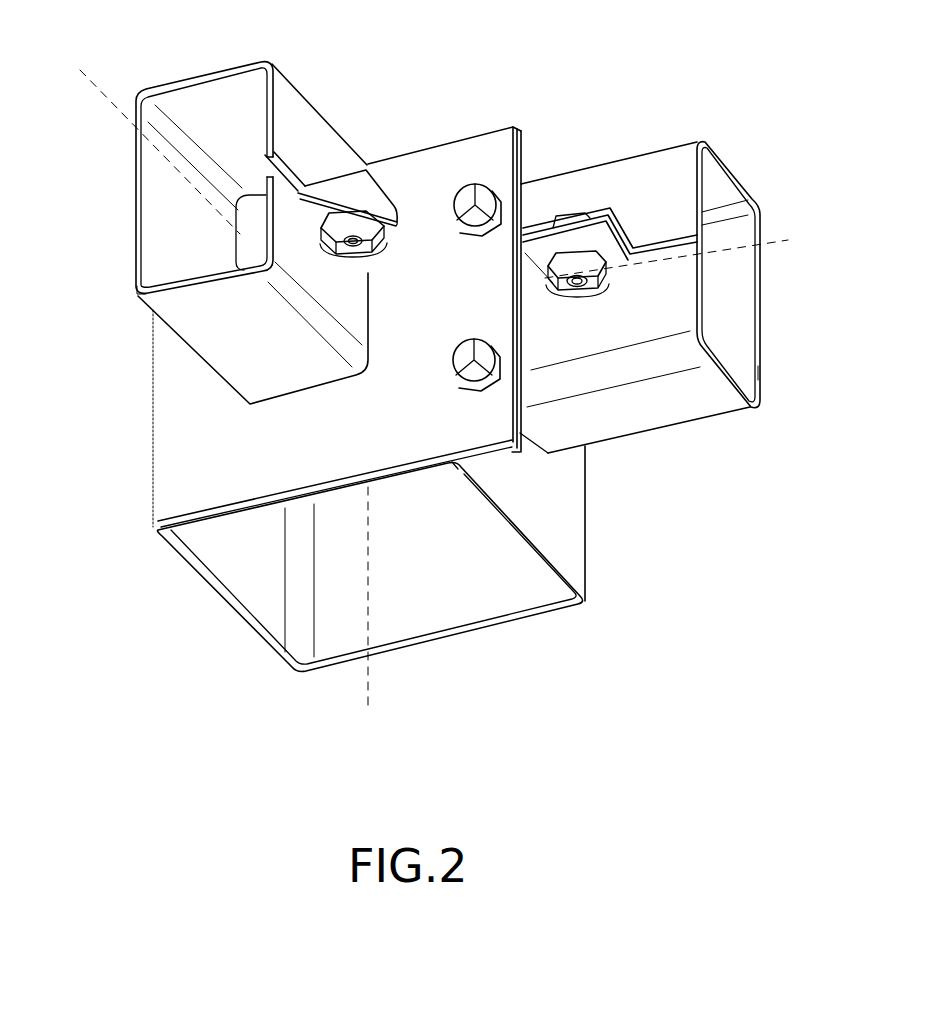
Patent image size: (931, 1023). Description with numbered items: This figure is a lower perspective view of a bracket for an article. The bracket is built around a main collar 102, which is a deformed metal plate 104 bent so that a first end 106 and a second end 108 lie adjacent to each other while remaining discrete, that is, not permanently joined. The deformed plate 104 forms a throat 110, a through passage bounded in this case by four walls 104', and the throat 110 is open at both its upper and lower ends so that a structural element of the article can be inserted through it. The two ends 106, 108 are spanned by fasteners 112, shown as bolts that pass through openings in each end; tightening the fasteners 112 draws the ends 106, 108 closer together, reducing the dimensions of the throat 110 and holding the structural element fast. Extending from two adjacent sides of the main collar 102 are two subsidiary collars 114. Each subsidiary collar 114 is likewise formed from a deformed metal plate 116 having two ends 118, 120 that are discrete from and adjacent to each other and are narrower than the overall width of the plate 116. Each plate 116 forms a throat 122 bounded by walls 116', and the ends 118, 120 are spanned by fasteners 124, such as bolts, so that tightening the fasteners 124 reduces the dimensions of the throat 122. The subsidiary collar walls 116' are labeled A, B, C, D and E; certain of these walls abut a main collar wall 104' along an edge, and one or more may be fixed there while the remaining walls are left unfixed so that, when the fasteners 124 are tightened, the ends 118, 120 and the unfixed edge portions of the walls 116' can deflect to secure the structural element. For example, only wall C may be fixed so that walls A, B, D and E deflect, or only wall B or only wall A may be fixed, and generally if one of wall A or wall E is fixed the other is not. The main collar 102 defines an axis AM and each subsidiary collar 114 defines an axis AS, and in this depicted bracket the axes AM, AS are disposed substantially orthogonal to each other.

The main collar 102 is at (502, 630).
The deformed metal plate 104 is at (613, 549).
The walls 104' is at (403, 582).
The first end 106 is at (483, 427).
The second end 108 is at (521, 470).
The throat 110 is at (226, 563).
The fasteners 112 is at (473, 222).
The subsidiary collars 114 is at (137, 296).
The deformed metal plate 116 is at (439, 235).
The walls 116' is at (442, 237).
The end 118 is at (316, 226).
The end 120 is at (323, 163).
The throat 122 is at (179, 103).
The fasteners 124 is at (368, 238).
The subsidiary collar axis AS is at (436, 156).
The main collar axis AM is at (368, 619).
The wall A is at (303, 159).
The wall B is at (236, 128).
The wall C is at (167, 229).
The wall D is at (242, 332).
The wall E is at (299, 242).